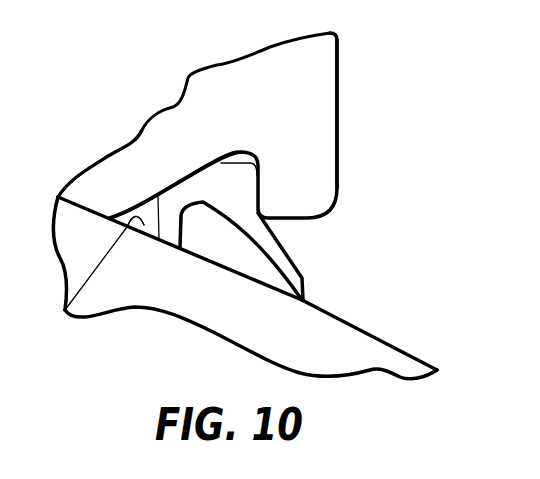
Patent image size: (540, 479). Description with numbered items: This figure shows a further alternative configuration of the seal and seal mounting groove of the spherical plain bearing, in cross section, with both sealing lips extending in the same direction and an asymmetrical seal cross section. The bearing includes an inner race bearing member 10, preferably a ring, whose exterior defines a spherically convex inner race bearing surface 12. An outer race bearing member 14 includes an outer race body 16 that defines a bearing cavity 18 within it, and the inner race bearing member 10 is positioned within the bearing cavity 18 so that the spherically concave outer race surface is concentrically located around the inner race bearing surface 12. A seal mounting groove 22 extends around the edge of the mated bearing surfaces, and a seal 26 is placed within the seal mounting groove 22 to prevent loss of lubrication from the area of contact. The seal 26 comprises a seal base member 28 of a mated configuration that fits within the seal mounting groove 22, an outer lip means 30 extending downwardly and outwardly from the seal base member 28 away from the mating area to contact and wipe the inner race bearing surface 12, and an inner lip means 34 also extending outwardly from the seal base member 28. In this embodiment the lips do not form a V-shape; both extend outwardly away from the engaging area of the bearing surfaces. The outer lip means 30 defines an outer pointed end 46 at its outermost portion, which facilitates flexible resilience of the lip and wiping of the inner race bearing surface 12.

The inner race bearing member 10 is at (103, 257).
The inner race bearing surface 12 is at (65, 312).
The outer race bearing member 14 is at (320, 132).
The outer race body 16 is at (338, 70).
The bearing cavity 18 is at (144, 225).
The seal mounting groove 22 is at (145, 203).
The seal 26 is at (185, 202).
The seal base member 28 is at (225, 181).
The outer lip means 30 is at (270, 253).
The inner lip means 34 is at (163, 208).
The outer pointed end 46 is at (303, 300).